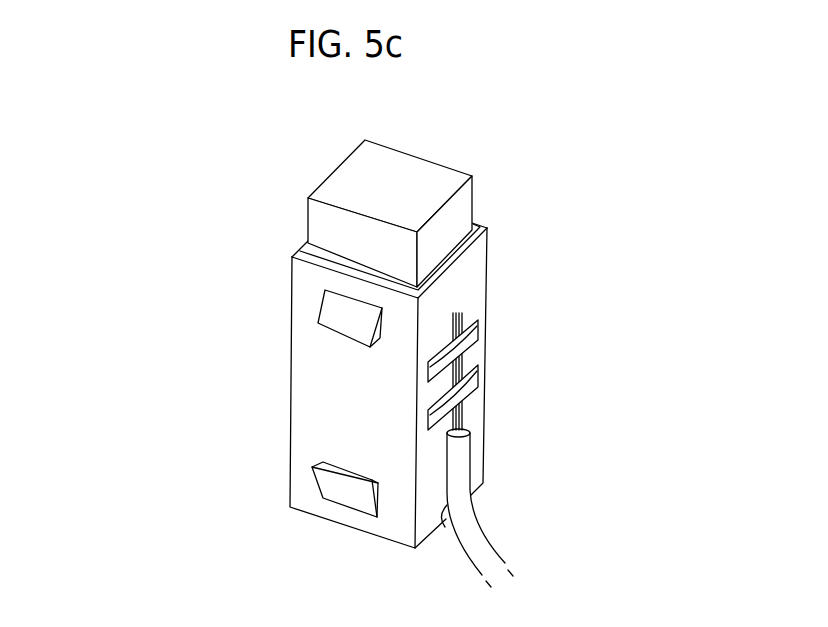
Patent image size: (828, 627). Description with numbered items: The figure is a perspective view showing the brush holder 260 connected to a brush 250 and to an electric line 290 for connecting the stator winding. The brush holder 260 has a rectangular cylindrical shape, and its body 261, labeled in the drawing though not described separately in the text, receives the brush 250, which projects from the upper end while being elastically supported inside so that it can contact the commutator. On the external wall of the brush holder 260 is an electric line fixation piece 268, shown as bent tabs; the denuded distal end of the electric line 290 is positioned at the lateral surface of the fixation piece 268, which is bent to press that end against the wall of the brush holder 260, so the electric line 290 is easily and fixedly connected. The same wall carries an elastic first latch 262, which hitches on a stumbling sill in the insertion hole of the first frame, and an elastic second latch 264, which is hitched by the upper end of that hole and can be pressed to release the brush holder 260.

The brush 250 is at (460, 210).
The brush holder 260 is at (337, 398).
The housing body 261 is at (317, 437).
The first latch 262 is at (342, 493).
The second latch 264 is at (328, 311).
The electric line fixation piece 268 is at (467, 345).
The electric line 290 is at (487, 532).